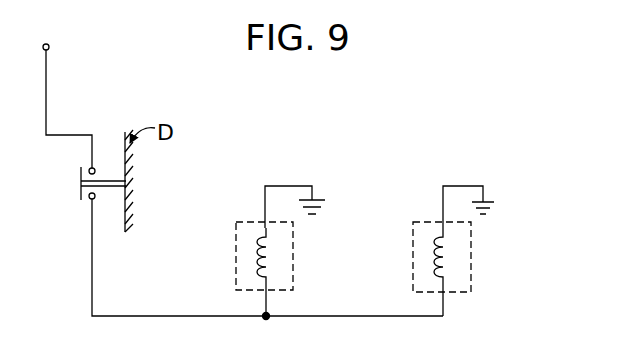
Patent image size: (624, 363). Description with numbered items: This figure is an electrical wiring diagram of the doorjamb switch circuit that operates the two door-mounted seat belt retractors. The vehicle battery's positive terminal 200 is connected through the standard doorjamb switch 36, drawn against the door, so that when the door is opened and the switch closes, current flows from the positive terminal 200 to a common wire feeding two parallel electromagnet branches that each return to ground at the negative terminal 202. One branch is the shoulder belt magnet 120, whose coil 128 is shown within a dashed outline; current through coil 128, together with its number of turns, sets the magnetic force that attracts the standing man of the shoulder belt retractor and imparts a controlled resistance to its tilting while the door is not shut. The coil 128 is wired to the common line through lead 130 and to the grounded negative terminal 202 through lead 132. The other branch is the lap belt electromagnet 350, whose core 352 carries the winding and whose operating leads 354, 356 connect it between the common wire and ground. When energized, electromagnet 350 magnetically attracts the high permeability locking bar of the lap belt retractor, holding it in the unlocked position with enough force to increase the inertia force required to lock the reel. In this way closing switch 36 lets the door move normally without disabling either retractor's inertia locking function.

The positive terminal 200 is at (50, 48).
The doorjamb switch 36 is at (80, 193).
The electromagnet 350 is at (266, 252).
The core 352 is at (274, 273).
The operating lead 354 is at (268, 303).
The operating lead 356 is at (281, 186).
The magnet 120 is at (481, 230).
The coil 128 is at (435, 266).
The shoulder belt solenoid lead 130 is at (443, 305).
The shoulder belt solenoid ground lead 132 is at (466, 186).
The negative terminal 202 is at (495, 211).